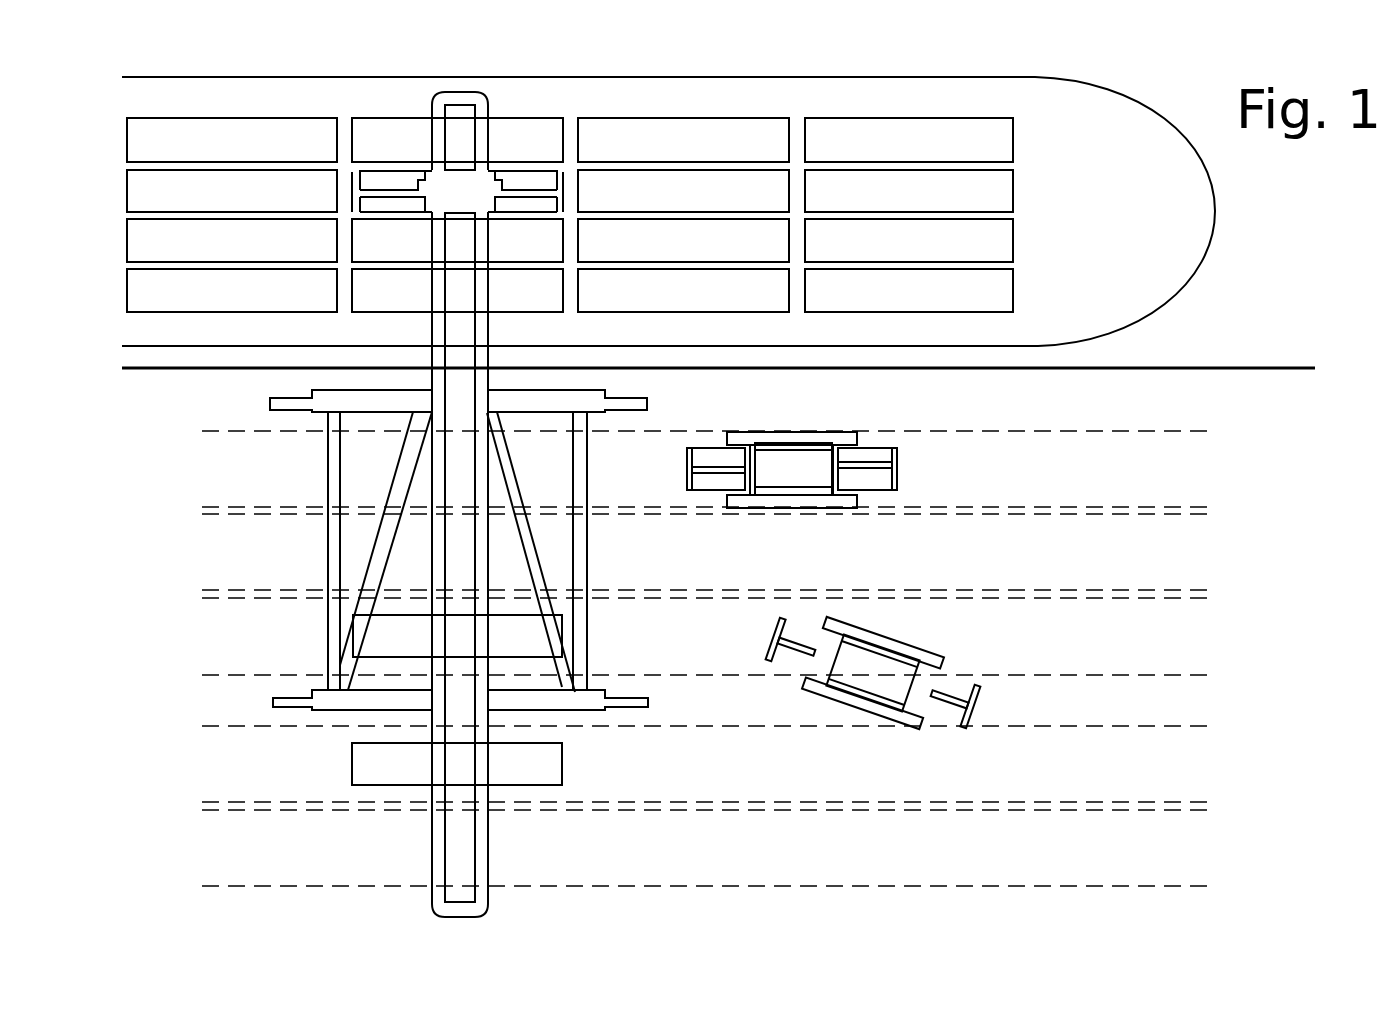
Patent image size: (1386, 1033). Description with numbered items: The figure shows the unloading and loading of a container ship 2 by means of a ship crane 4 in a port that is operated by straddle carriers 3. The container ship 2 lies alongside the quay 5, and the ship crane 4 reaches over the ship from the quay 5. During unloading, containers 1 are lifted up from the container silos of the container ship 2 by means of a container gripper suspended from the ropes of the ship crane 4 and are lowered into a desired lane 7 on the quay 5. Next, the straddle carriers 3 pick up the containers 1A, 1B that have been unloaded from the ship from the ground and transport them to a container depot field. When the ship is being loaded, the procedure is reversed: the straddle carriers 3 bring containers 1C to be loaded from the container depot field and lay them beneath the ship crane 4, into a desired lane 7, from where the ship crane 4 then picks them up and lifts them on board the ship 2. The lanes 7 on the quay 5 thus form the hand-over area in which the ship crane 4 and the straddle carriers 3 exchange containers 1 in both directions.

The container 1 is at (570, 215).
The container ship 2 is at (668, 211).
The quay 5 is at (1182, 366).
The ship crane 4 is at (313, 412).
The container 1A is at (457, 636).
The container 1B is at (457, 764).
The container 1C is at (712, 490).
The straddle carrier 3 is at (836, 587).
The lane 7 is at (706, 658).